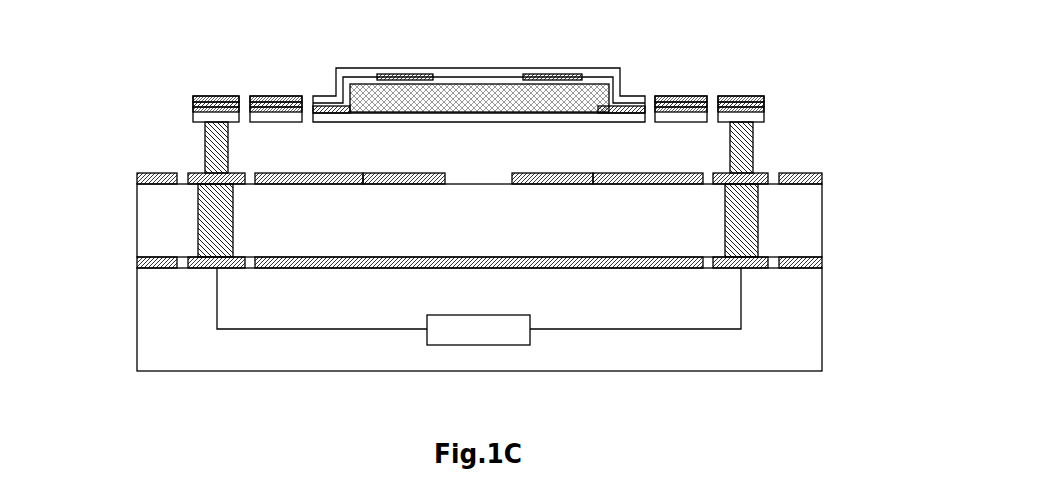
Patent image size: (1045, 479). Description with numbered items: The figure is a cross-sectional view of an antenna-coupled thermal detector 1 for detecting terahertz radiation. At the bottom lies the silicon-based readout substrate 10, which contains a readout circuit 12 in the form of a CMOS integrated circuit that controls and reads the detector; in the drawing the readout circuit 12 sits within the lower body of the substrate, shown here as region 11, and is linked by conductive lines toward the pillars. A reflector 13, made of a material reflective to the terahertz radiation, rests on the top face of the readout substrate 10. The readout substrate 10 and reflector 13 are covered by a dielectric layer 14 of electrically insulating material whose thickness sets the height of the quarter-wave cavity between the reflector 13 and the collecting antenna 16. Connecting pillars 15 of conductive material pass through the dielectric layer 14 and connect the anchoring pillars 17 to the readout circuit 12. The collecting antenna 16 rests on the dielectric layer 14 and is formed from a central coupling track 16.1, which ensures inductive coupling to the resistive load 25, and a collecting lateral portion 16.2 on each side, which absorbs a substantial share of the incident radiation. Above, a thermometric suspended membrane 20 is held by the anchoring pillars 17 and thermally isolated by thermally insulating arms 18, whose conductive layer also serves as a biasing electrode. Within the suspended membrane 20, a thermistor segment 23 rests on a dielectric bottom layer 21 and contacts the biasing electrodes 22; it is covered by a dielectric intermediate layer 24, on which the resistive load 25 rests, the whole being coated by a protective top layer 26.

The thermal detector 1 is at (96, 89).
The readout substrate 10 is at (874, 298).
The substrate 11 is at (824, 320).
The readout circuit 12 is at (479, 306).
The reflector 13 is at (824, 262).
The dielectric layer 14 is at (824, 226).
The connecting pillars 15 is at (197, 219).
The collecting antenna 16 is at (518, 210).
The coupling track 16.1 is at (405, 186).
The collecting lateral portion 16.2 is at (310, 186).
The anchoring pillars 17 is at (203, 147).
The thermally insulating arms 18 is at (279, 93).
The suspended membrane 20 is at (360, 43).
The dielectric bottom layer 21 is at (478, 123).
The biasing electrodes 22 is at (328, 113).
The thermistor segment 23 is at (478, 83).
The dielectric intermediate layer 24 is at (602, 77).
The resistive load 25 is at (393, 72).
The protective top layer 26 is at (633, 92).